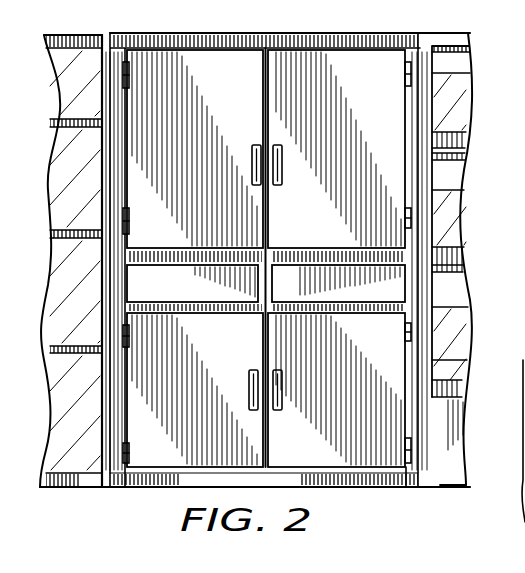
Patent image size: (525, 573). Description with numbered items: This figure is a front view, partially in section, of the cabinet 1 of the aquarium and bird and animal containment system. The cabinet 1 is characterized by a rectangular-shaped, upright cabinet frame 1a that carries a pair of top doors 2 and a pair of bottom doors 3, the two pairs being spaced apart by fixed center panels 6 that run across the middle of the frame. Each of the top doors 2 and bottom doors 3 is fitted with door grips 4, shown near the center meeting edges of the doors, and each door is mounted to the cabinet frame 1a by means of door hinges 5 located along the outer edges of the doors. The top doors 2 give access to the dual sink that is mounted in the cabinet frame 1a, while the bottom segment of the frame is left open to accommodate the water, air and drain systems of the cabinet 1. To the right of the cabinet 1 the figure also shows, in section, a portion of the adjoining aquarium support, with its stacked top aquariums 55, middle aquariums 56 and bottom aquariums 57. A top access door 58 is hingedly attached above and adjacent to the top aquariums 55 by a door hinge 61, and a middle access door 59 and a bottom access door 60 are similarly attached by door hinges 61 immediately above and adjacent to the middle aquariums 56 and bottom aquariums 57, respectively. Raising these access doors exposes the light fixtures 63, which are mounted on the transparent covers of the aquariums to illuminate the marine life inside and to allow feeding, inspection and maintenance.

The cabinet 1 is at (100, 492).
The cabinet frame 1a is at (157, 492).
The top doors 2 is at (190, 163).
The bottom doors 3 is at (202, 359).
The door grips 4 is at (253, 186).
The door hinges 5 is at (130, 80).
The fixed center panels 6 is at (202, 295).
The top aquariums 55 is at (449, 112).
The middle aquariums 56 is at (449, 222).
The bottom aquariums 57 is at (444, 340).
The top access door 58 is at (463, 72).
The middle access door 59 is at (462, 182).
The bottom access door 60 is at (458, 292).
The door hinges 61 is at (463, 50).
The light fixtures 63 is at (462, 376).